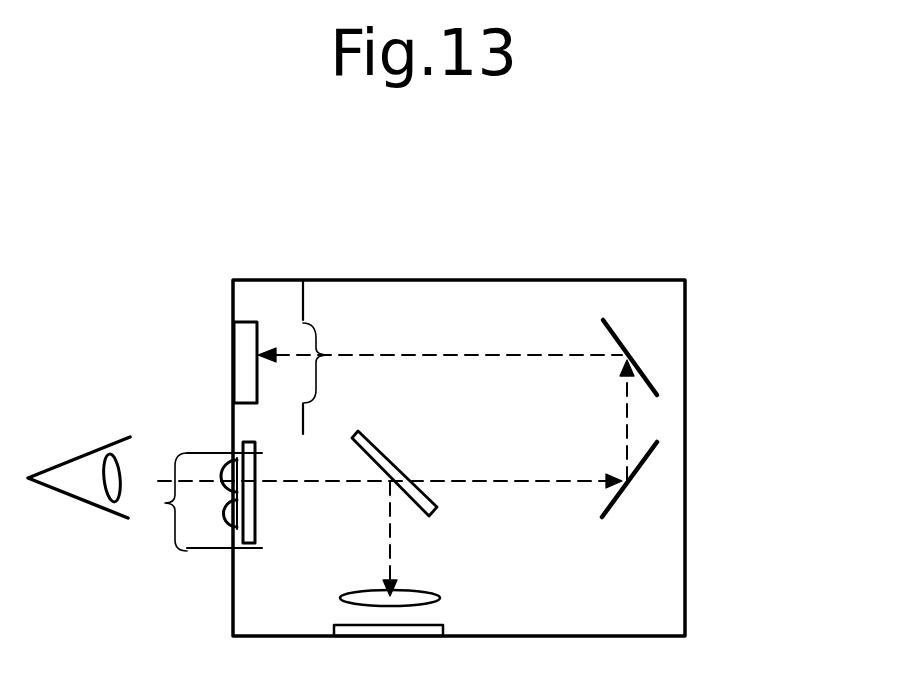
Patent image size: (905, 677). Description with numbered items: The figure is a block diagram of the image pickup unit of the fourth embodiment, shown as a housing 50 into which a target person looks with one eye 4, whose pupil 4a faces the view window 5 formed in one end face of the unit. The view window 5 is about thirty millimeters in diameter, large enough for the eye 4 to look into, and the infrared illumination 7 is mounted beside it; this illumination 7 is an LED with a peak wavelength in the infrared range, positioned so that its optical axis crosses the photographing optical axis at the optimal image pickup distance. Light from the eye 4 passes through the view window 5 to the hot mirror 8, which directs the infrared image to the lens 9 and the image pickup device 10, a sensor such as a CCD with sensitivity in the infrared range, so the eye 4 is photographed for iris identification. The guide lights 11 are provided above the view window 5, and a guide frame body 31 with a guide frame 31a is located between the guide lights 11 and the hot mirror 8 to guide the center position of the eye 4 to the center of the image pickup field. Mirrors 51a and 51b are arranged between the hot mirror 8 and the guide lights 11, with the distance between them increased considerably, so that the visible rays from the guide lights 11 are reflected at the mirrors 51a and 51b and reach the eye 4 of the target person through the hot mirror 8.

The apparatus housing 50 is at (578, 250).
The guide lights 11 is at (243, 320).
The guide frame body 31 is at (307, 296).
The guide frame 31a is at (348, 361).
The mirror 51a is at (623, 335).
The mirror 51b is at (623, 500).
The hot mirror 8 is at (378, 442).
The lens 9 is at (440, 597).
The image pickup device 10 is at (443, 628).
The eye 4 is at (82, 452).
The pupil 4a is at (122, 497).
The view window 5 is at (203, 502).
The infrared illumination 7 is at (222, 462).